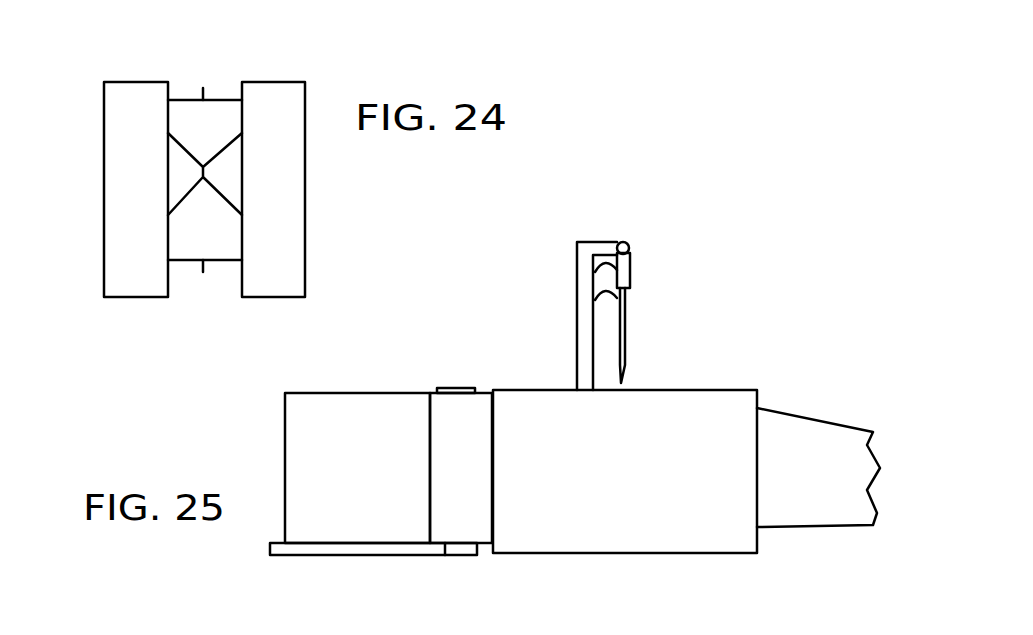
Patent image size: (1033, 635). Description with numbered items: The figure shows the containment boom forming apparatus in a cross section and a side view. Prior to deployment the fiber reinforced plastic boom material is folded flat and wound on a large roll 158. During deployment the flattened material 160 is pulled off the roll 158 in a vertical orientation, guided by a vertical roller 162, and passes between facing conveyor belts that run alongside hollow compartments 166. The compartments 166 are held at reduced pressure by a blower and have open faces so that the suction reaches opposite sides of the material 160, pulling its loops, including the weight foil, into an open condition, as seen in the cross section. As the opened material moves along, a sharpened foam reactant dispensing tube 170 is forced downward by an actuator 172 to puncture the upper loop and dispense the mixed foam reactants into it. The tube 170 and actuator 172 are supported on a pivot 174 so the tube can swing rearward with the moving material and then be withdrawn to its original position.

In FIG. 25, the roll 158 is at (337, 410).
In FIG. 24, the flattened material 160 is at (190, 95).
In FIG. 25, the flattened material 160 is at (462, 415).
In FIG. 25, the vertical roller 162 is at (450, 392).
In FIG. 24, the hollow compartments 166 is at (104, 155).
In FIG. 25, the foam reactant dispensing tube 170 is at (626, 338).
In FIG. 25, the actuator 172 is at (631, 268).
In FIG. 25, the pivot 174 is at (628, 243).